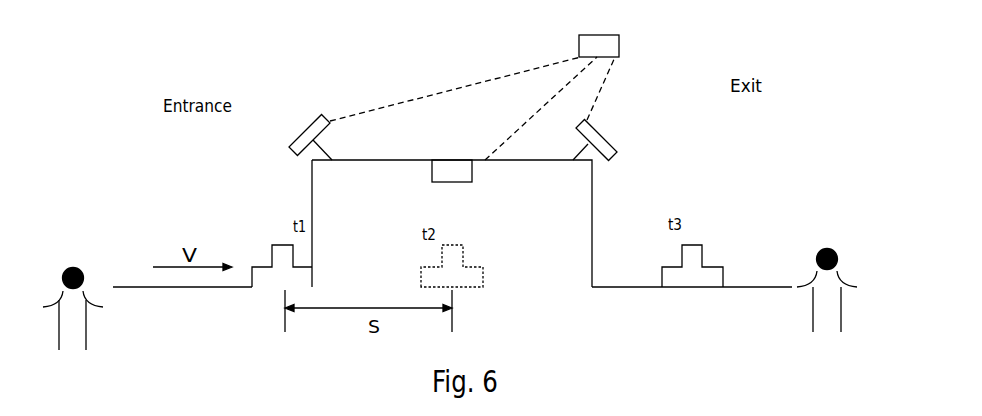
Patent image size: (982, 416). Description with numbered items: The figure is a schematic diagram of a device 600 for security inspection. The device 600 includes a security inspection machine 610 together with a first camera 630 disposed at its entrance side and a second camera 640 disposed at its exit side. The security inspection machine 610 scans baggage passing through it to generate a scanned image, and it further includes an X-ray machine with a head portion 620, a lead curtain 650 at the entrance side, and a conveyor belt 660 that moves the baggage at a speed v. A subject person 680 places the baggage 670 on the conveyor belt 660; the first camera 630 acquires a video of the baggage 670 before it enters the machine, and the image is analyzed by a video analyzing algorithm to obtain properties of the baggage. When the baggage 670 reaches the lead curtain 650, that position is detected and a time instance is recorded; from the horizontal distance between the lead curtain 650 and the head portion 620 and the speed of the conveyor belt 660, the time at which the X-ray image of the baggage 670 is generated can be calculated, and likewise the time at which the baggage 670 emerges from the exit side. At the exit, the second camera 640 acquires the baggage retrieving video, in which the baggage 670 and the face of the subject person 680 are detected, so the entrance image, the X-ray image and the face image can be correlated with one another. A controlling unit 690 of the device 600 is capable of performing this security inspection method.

The device for security inspection 600 is at (445, 62).
The security inspection machine 610 is at (522, 160).
The head portion of the X-ray machine 620 is at (446, 160).
The first camera 630 is at (326, 121).
The second camera 640 is at (600, 133).
The lead curtain 650 is at (312, 239).
The conveyor belt 660 is at (612, 287).
The baggage 670 is at (693, 245).
The subject person 680 is at (829, 250).
The controlling unit 690 is at (619, 44).